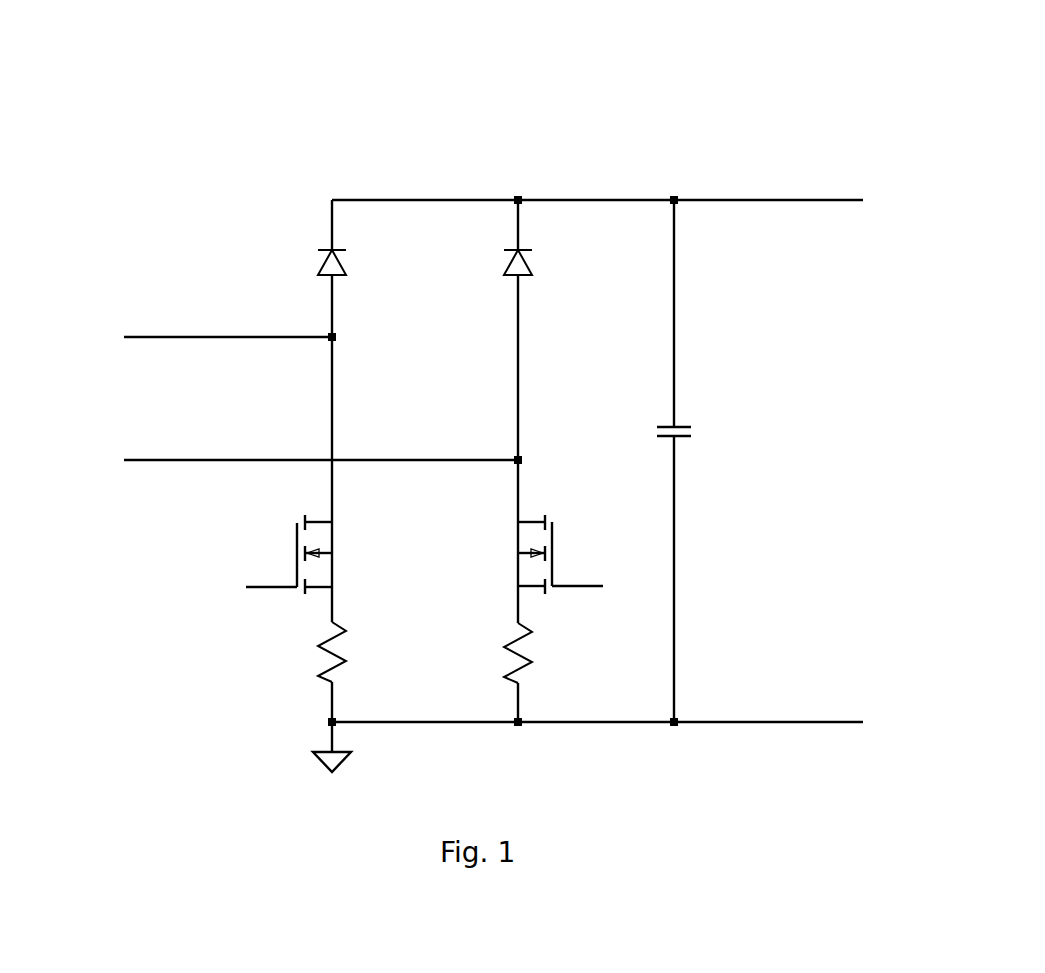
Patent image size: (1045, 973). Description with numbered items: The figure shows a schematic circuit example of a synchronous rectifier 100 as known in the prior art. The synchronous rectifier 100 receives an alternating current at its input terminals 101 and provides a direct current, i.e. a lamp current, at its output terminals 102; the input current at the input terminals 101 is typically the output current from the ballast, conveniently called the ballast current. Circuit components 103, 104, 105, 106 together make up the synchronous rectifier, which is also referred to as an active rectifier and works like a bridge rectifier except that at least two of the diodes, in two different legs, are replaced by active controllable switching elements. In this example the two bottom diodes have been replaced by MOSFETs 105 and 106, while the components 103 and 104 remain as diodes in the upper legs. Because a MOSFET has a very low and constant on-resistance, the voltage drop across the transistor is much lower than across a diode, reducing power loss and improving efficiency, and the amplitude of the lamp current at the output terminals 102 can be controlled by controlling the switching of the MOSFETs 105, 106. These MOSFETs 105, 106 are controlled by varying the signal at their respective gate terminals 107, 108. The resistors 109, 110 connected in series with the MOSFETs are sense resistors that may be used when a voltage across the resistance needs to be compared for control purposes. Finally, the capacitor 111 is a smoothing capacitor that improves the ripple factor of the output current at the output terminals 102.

The synchronous rectifier 100 is at (750, 127).
The input terminals 101 is at (130, 348).
The output terminals 102 is at (849, 216).
The circuit component 103 is at (300, 252).
The circuit component 104 is at (490, 262).
The MOSFET 105 is at (372, 545).
The MOSFET 106 is at (558, 541).
The gate terminal 107 is at (222, 565).
The gate terminal 108 is at (617, 573).
The resistor 109 is at (303, 661).
The resistor 110 is at (543, 658).
The capacitor 111 is at (690, 390).